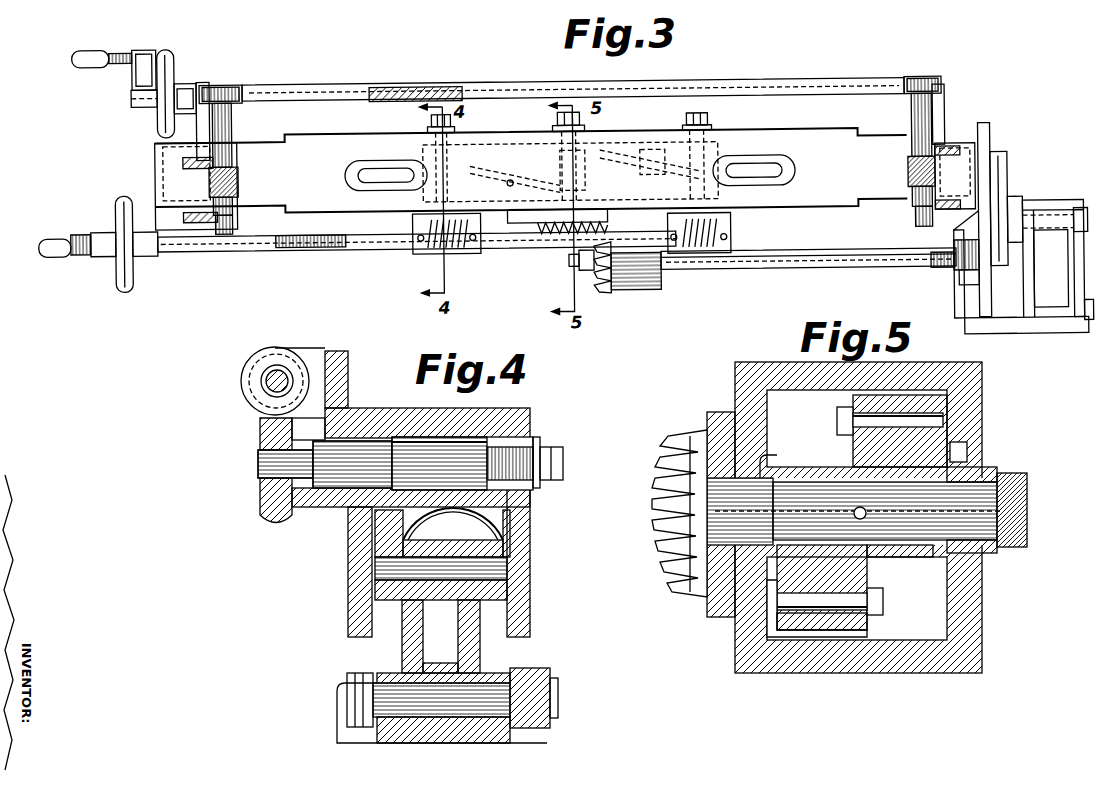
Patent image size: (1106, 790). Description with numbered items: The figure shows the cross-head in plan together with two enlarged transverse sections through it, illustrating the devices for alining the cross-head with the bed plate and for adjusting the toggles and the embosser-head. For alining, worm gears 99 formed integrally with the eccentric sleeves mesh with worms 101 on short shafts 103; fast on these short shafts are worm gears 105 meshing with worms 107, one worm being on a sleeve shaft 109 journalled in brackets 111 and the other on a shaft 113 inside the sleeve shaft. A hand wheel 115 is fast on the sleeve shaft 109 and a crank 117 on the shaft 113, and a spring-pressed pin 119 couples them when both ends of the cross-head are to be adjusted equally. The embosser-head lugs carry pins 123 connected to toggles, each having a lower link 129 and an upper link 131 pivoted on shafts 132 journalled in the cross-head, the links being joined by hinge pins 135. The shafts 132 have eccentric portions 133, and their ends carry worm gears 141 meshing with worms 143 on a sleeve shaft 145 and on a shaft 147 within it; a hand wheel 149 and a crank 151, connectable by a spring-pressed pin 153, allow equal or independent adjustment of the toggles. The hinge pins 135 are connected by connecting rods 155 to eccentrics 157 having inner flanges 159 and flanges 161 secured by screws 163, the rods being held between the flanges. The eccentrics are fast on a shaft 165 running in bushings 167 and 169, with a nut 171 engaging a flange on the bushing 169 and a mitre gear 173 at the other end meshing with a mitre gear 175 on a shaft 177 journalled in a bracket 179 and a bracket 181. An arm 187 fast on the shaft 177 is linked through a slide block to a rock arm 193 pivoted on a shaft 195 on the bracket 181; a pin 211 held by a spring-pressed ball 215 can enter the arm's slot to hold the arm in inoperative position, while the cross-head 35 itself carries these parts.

In FIG. 3, the frame bar 35 is at (808, 205).
In FIG. 4, the frame bar 35 is at (530, 528).
In FIG. 5, the frame bar 35 is at (967, 627).
In FIG. 3, the worm gears 99 is at (232, 222).
In FIG. 3, the worms 101 is at (238, 177).
In FIG. 3, the short shafts 103 is at (925, 116).
In FIG. 3, the worm gears 105 is at (240, 96).
In FIG. 3, the worms 107 is at (225, 83).
In FIG. 3, the sleeve shaft 109 is at (322, 81).
In FIG. 3, the brackets 111 is at (197, 118).
In FIG. 3, the shaft 113 is at (398, 84).
In FIG. 3, the hand wheel 115 is at (175, 58).
In FIG. 3, the crank 117 is at (133, 73).
In FIG. 3, the spring-pressed pin 119 is at (147, 48).
In FIG. 4, the pins 123 is at (505, 697).
In FIG. 4, the lower link 129 is at (405, 645).
In FIG. 4, the upper link 131 is at (377, 530).
In FIG. 4, the shafts 132 is at (258, 464).
In FIG. 4, the eccentric portions 133 is at (420, 447).
In FIG. 4, the hinge pins 135 is at (375, 574).
In FIG. 4, the worm gears 141 is at (261, 505).
In FIG. 3, the worms 143 is at (428, 253).
In FIG. 4, the worms 143 is at (242, 397).
In FIG. 3, the sleeve shaft 145 is at (370, 247).
In FIG. 4, the sleeve shaft 145 is at (266, 377).
In FIG. 3, the shaft 147 is at (328, 245).
In FIG. 4, the shaft 147 is at (263, 396).
In FIG. 3, the hand wheel 149 is at (115, 270).
In FIG. 3, the crank 151 is at (60, 233).
In FIG. 3, the spring-pressed pin 153 is at (100, 229).
In FIG. 3, the connecting rods 155 is at (585, 171).
In FIG. 5, the connecting rods 155 is at (922, 558).
In FIG. 5, the eccentrics 157 is at (945, 455).
In FIG. 5, the inner flanges 159 is at (867, 633).
In FIG. 5, the flanges 161 is at (967, 455).
In FIG. 5, the screws 163 is at (837, 419).
In FIG. 3, the shaft 165 is at (597, 143).
In FIG. 5, the shaft 165 is at (977, 503).
In FIG. 5, the bushing 167 is at (765, 462).
In FIG. 5, the bushing 169 is at (970, 548).
In FIG. 5, the nut 171 is at (1018, 498).
In FIG. 3, the mitre gear 173 is at (556, 236).
In FIG. 5, the mitre gear 173 is at (662, 447).
In FIG. 3, the mitre gear 175 is at (605, 289).
In FIG. 3, the shaft 177 is at (780, 271).
In FIG. 3, the bracket 179 is at (652, 292).
In FIG. 3, the bracket 181 is at (985, 203).
In FIG. 3, the arm 187 is at (996, 272).
In FIG. 3, the rock arm 193 is at (1067, 290).
In FIG. 3, the shaft 195 is at (1080, 213).
In FIG. 3, the pin 211 is at (930, 270).
In FIG. 3, the spring-pressed ball 215 is at (945, 276).